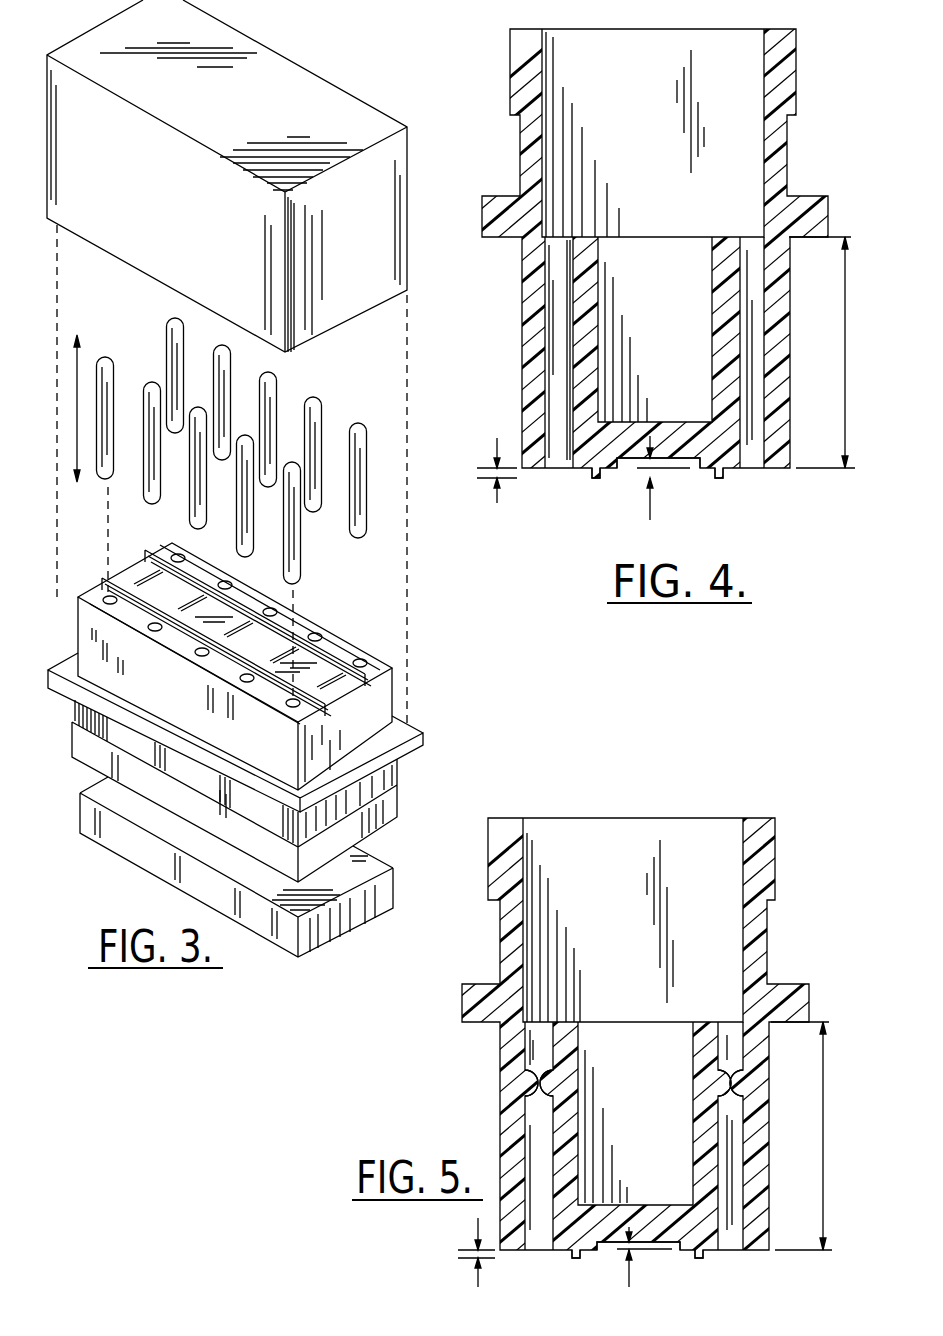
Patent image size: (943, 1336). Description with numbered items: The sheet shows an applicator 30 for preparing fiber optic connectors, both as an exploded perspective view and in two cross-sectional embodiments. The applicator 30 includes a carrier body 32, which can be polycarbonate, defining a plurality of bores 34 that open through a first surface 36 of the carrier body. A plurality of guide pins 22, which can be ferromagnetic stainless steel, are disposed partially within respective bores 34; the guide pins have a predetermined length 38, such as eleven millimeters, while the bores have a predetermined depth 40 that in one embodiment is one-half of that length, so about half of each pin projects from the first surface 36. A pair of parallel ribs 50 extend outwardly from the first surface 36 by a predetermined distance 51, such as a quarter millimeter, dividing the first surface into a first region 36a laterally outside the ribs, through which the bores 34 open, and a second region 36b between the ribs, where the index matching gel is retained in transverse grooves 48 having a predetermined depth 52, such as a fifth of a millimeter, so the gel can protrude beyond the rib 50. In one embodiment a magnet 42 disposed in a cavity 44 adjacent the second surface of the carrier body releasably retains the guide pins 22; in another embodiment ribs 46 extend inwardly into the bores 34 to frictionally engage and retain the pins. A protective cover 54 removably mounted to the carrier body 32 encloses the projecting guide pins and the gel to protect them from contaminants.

In FIG. 3, the guide pins 22 is at (170, 343).
In FIG. 3, the applicator 30 is at (270, 731).
In FIG. 4, the applicator 30 is at (486, 283).
In FIG. 5, the applicator 30 is at (476, 1061).
In FIG. 3, the carrier body 32 is at (385, 695).
In FIG. 4, the carrier body 32 is at (767, 168).
In FIG. 5, the carrier body 32 is at (750, 936).
In FIG. 3, the bores 34 is at (317, 636).
In FIG. 4, the bores 34 is at (593, 466).
In FIG. 5, the bores 34 is at (545, 1243).
In FIG. 4, the first surface 36 is at (543, 466).
In FIG. 5, the first surface 36 is at (527, 1248).
In FIG. 3, the first region 36a is at (300, 630).
In FIG. 3, the second region 36b is at (345, 680).
In FIG. 3, the predetermined length 38 is at (72, 388).
In FIG. 4, the predetermined depth 40 is at (848, 323).
In FIG. 5, the predetermined depth 40 is at (823, 1075).
In FIG. 3, the magnet 42 is at (393, 870).
In FIG. 4, the cavity 44 is at (750, 71).
In FIG. 5, the cavity 44 is at (726, 853).
In FIG. 5, the ribs 46 is at (530, 1088).
In FIG. 3, the groove 48 is at (325, 668).
In FIG. 4, the groove 48 is at (668, 458).
In FIG. 5, the groove 48 is at (660, 1240).
In FIG. 3, the ribs 50 is at (103, 580).
In FIG. 4, the ribs 50 is at (720, 478).
In FIG. 5, the ribs 50 is at (700, 1258).
In FIG. 4, the predetermined distance 51 is at (497, 462).
In FIG. 5, the predetermined distance 51 is at (478, 1244).
In FIG. 4, the predetermined depth 52 is at (650, 502).
In FIG. 5, the predetermined depth 52 is at (630, 1281).
In FIG. 3, the protective cover 54 is at (277, 78).